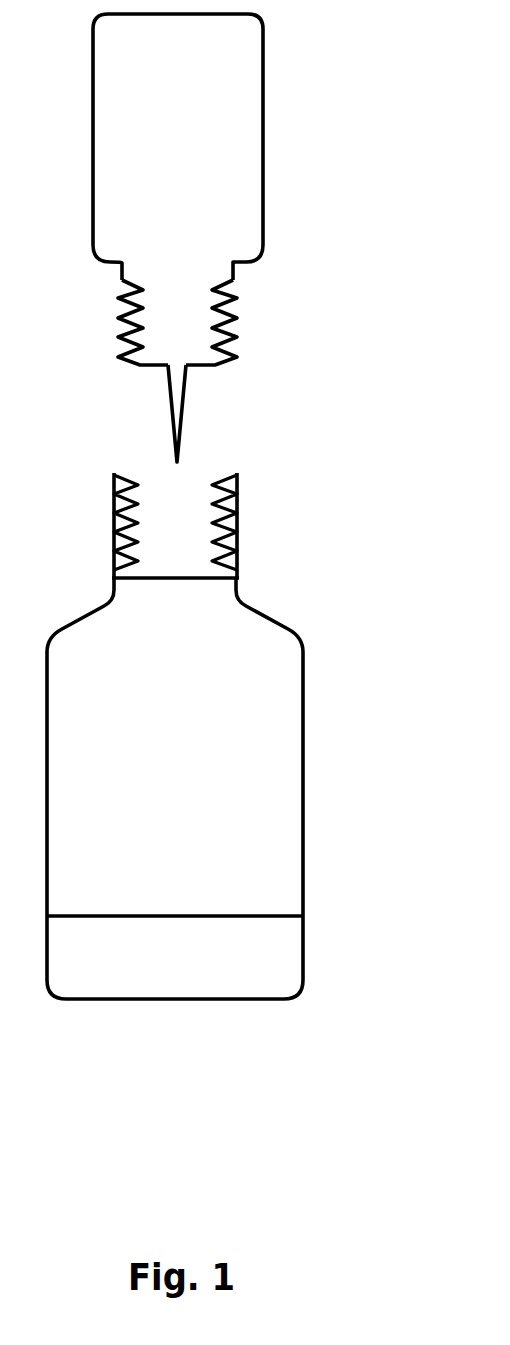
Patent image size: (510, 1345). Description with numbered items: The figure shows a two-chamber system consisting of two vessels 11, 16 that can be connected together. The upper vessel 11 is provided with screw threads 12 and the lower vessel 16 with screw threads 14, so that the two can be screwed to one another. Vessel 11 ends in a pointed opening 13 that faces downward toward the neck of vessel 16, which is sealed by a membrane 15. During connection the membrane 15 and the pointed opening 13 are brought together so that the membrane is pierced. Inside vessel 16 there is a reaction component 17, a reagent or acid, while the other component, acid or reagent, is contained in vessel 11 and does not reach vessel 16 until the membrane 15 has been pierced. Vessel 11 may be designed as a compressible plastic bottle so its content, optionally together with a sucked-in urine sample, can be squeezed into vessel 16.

The vessel 11 is at (263, 108).
The screw threads 12 is at (240, 302).
The pointed opening 13 is at (183, 420).
The screw threads 14 is at (237, 480).
The membrane 15 is at (187, 578).
The vessel 16 is at (303, 730).
The reaction component 17 is at (268, 963).